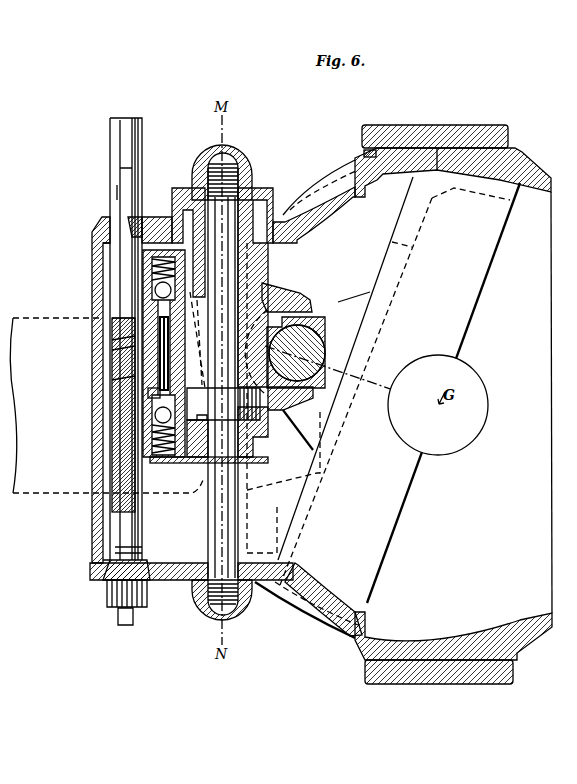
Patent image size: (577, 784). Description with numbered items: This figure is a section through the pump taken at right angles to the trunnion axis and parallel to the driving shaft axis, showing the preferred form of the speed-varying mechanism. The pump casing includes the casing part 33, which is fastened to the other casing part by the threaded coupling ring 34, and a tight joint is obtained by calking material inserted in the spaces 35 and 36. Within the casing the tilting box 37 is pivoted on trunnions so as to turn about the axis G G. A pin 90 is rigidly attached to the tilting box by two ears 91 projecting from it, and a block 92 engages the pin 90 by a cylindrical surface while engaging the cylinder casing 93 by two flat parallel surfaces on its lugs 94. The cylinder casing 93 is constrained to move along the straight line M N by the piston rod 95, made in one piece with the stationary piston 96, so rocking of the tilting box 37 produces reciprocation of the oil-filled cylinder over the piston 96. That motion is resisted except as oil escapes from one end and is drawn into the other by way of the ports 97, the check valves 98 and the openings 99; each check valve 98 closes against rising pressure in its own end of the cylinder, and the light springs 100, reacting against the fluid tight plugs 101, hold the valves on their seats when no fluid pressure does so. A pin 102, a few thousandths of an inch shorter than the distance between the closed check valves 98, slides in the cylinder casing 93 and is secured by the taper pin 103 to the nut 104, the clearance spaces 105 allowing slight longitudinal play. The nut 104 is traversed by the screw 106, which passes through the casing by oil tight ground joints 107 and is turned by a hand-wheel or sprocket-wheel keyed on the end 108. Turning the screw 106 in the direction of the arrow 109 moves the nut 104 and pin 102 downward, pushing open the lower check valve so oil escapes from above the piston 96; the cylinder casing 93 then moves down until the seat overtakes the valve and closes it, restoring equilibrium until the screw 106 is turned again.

The pump casing part 33 is at (317, 620).
The threaded coupling ring 34 is at (432, 682).
The calking space 35 is at (365, 153).
The calking space 36 is at (500, 147).
The tilting box 37 is at (507, 200).
The pin 90 is at (307, 357).
The ears 91 is at (340, 302).
The block 92 is at (325, 322).
The cylinder casing 93 is at (273, 268).
The lugs 94 is at (297, 300).
The piston rod 95 is at (222, 513).
The piston 96 is at (223, 404).
The ports 97 is at (190, 362).
The check valves 98 is at (113, 417).
The openings 99 is at (148, 393).
The light springs 100 is at (157, 457).
The fluid tight plugs 101 is at (165, 463).
The pin 102 is at (115, 320).
The taper pin 103 is at (110, 340).
The nut 104 is at (110, 350).
The clearance spaces 105 is at (110, 380).
The screw 106 is at (120, 267).
The oil tight ground joints 107 is at (97, 230).
The screw end 108 is at (118, 132).
The arrow 109 is at (114, 210).